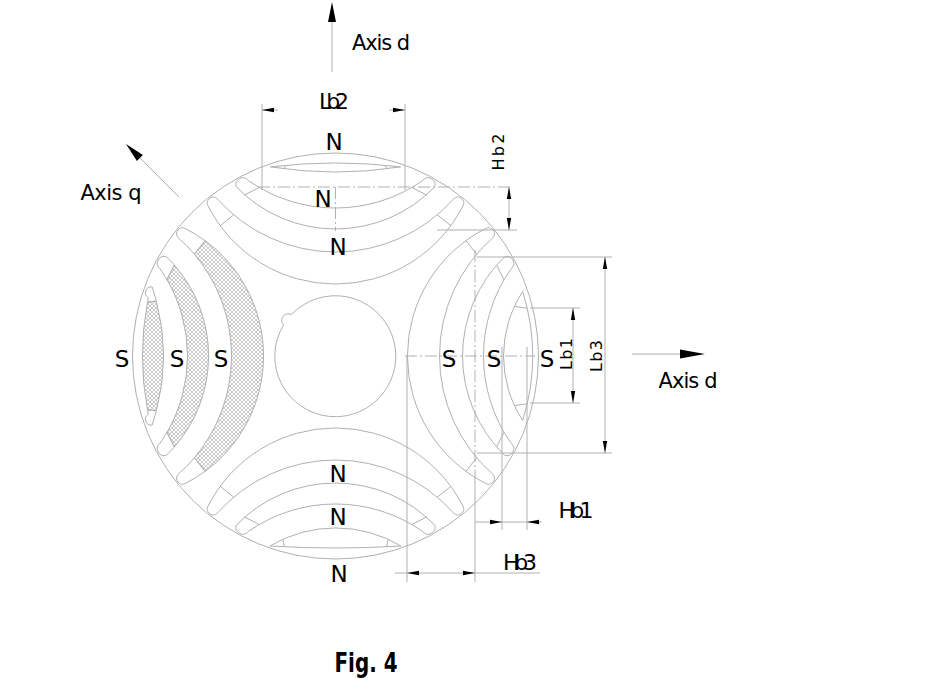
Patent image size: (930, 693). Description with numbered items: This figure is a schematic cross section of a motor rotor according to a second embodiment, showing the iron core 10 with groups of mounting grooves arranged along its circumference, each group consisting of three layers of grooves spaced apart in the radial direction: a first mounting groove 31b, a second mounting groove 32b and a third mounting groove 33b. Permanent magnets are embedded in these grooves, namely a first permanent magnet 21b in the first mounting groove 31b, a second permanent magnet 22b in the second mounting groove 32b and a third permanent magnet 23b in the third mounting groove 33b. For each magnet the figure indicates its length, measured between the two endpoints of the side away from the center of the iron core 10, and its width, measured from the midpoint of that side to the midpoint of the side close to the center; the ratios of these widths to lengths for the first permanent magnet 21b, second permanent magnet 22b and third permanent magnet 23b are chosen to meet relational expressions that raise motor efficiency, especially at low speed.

The iron core 10 is at (275, 411).
The first permanent magnet 21b is at (152, 367).
The second permanent magnet 22b is at (190, 395).
The third permanent magnet 23b is at (222, 438).
The first mounting groove 31b is at (148, 298).
The second mounting groove 32b is at (165, 270).
The third mounting groove 33b is at (195, 244).